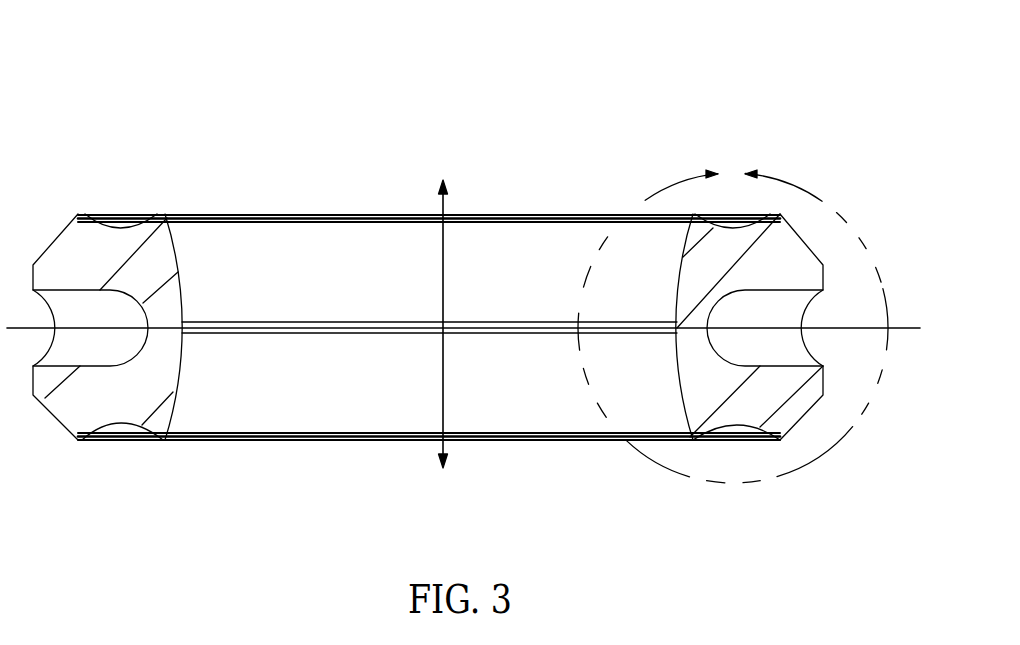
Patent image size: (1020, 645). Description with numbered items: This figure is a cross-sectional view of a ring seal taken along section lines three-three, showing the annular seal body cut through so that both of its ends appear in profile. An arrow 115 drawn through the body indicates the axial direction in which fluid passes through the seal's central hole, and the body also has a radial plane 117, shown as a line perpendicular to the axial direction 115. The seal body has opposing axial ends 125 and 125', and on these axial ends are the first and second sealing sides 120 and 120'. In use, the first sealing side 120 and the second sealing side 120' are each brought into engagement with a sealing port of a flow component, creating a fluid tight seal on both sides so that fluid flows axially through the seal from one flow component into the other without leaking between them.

The axial direction arrow 115 is at (447, 210).
The radial plane 117 is at (907, 330).
The first sealing side 120 is at (733, 241).
The second sealing side 120' is at (117, 388).
The first axial end 125 is at (429, 153).
The second axial end 125' is at (429, 501).